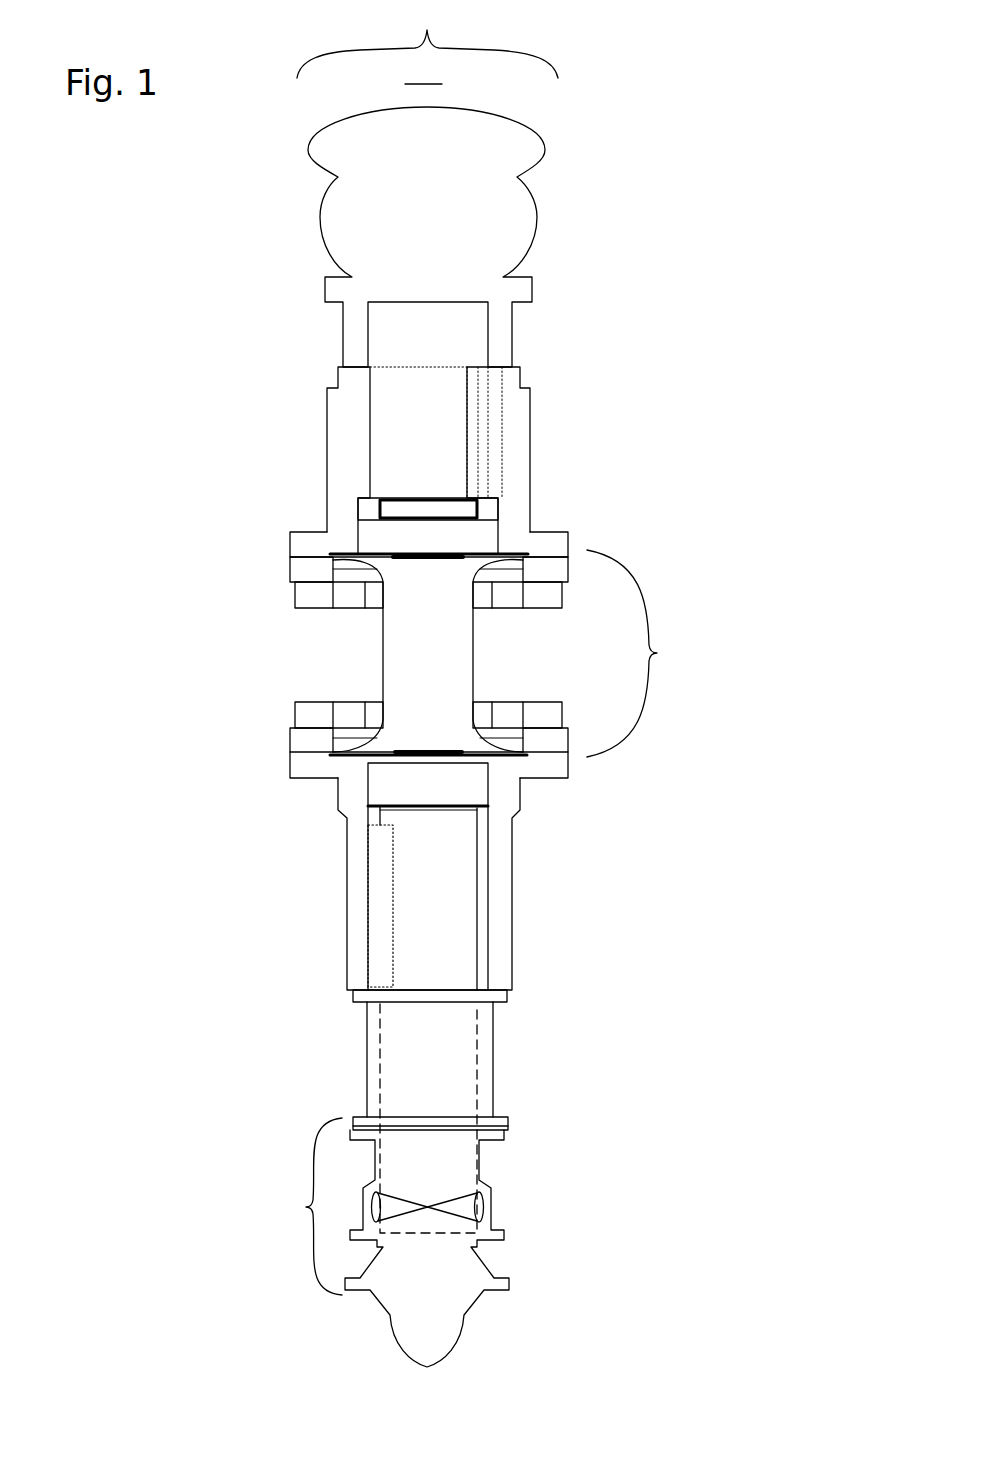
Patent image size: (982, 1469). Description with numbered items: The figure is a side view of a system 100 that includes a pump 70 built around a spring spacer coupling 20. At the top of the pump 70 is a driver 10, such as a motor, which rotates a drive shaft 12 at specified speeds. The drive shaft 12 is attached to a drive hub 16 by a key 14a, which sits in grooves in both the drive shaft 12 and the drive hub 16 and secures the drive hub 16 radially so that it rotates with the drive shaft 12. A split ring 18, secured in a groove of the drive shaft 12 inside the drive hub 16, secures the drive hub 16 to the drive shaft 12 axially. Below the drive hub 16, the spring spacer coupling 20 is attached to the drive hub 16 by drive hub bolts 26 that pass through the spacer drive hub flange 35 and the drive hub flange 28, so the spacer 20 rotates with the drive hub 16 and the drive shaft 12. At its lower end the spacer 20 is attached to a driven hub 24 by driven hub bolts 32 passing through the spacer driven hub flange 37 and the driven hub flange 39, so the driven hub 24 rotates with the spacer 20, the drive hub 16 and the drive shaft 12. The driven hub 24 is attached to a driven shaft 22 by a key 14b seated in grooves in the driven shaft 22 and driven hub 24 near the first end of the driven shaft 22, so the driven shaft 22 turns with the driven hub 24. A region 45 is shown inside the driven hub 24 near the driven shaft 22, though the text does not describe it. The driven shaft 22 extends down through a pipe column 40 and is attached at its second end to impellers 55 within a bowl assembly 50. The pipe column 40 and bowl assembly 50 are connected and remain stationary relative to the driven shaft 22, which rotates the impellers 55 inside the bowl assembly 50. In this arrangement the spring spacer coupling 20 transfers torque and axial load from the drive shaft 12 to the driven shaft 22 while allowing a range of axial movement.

The system 100 is at (424, 73).
The pump 70 is at (427, 39).
The driver 10 is at (503, 213).
The drive shaft 12 is at (450, 348).
The key 14a is at (493, 438).
The key 14b is at (377, 923).
The drive hub 16 is at (340, 403).
The split ring 18 is at (492, 508).
The spring spacer coupling 20 is at (657, 653).
The driven shaft 22 is at (423, 951).
The driven hub 24 is at (503, 898).
The drive hub bolts 26 is at (383, 603).
The drive hub flange 28 is at (308, 543).
The driven hub bolts 32 is at (308, 717).
The spacer drive hub flange 35 is at (298, 567).
The spacer driven hub flange 37 is at (308, 738).
The driven hub flange 39 is at (303, 765).
The pipe column 40 is at (365, 1082).
The insert 45 is at (468, 795).
The bowl assembly 50 is at (305, 1207).
The impellers 55 is at (473, 1200).